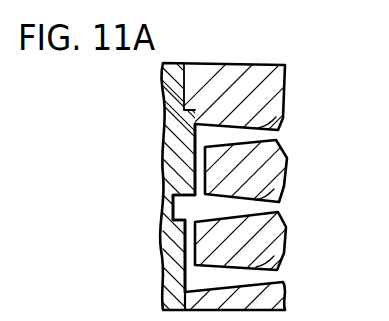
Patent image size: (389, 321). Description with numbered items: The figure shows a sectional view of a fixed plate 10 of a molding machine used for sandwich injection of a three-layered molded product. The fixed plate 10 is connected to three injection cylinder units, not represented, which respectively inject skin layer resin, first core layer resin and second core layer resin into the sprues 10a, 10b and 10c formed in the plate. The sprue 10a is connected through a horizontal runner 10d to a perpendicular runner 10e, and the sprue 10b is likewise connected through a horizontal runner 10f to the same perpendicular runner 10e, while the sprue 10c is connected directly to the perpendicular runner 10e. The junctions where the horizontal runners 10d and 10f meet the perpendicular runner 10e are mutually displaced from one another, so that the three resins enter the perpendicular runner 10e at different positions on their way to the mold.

The fixed plate 10 is at (267, 68).
The sprue 10a is at (274, 125).
The sprue 10b is at (283, 265).
The sprue 10c is at (281, 199).
The horizontal runner 10d is at (198, 159).
The perpendicular runner 10e is at (176, 208).
The horizontal runner 10f is at (188, 248).